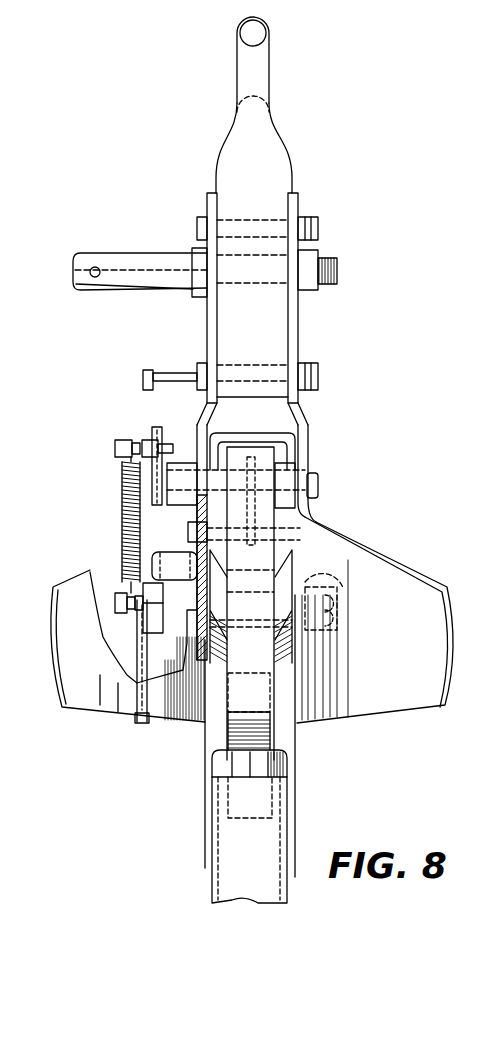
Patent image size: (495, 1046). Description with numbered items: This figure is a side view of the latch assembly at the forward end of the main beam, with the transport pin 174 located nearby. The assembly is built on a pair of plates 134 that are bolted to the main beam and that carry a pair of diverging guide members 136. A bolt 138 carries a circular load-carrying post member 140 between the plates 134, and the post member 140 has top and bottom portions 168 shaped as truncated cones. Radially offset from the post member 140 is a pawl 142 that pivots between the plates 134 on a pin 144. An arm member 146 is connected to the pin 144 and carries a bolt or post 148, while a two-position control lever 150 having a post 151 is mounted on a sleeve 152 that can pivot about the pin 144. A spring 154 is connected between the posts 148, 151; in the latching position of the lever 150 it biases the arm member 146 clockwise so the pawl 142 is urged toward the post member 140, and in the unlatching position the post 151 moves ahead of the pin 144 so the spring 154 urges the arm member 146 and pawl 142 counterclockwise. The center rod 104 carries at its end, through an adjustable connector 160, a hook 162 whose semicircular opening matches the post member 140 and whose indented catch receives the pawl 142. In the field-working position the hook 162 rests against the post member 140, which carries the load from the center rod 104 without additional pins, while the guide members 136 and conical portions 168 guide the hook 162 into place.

The center rod 104 is at (238, 850).
The plates 134 is at (205, 330).
The diverging guide members 136 is at (418, 593).
The bolt 138 is at (187, 632).
The load-carrying post member 140 is at (340, 560).
The pawl 142 is at (247, 448).
The pin 144 is at (318, 492).
The arm member 146 is at (158, 428).
The bolt or post 148 is at (112, 448).
The two-position control lever 150 is at (138, 723).
The post 151 is at (113, 603).
The sleeve 152 is at (183, 490).
The spring 154 is at (122, 510).
The adjustable connector 160 is at (288, 768).
The hook 162 is at (257, 693).
The top and bottom portions 168 is at (280, 643).
The transport pin 174 is at (145, 268).